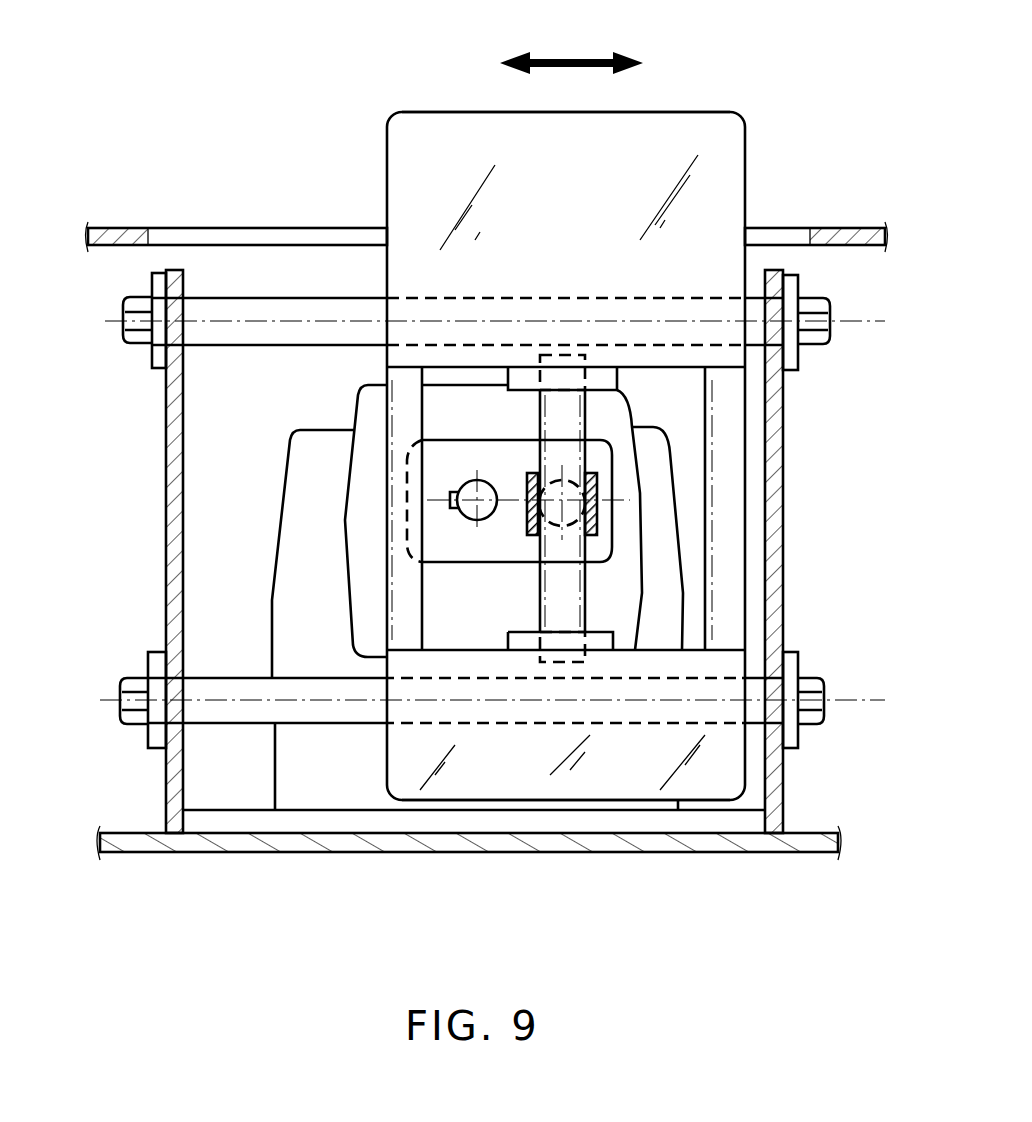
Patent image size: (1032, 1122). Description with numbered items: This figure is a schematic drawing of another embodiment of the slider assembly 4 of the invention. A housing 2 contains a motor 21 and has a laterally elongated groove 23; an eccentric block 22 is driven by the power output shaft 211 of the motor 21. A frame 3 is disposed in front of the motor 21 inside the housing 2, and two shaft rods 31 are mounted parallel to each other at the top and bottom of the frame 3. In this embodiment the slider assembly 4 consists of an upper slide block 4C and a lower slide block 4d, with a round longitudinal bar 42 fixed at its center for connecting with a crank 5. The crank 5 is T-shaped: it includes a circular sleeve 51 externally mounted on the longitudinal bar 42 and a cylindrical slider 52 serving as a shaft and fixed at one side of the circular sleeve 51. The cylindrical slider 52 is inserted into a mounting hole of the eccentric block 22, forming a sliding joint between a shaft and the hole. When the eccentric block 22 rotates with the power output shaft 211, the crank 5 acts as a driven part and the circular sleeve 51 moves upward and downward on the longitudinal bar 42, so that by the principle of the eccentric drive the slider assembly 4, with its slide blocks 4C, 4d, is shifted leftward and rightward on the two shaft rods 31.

The housing 2 is at (122, 230).
The laterally elongated groove 23 is at (345, 230).
The frame 3 is at (170, 505).
The shaft rods 31 is at (288, 308).
The slider assembly 4 is at (747, 106).
The upper slide block 4C is at (722, 197).
The lower slide block 4d is at (716, 775).
The motor 21 is at (295, 513).
The power output shaft 211 is at (465, 492).
The eccentric block 22 is at (423, 542).
The longitudinal bar 42 is at (570, 598).
The crank 5 is at (733, 486).
The circular sleeve 51 is at (597, 493).
The cylindrical slider 52 is at (578, 517).